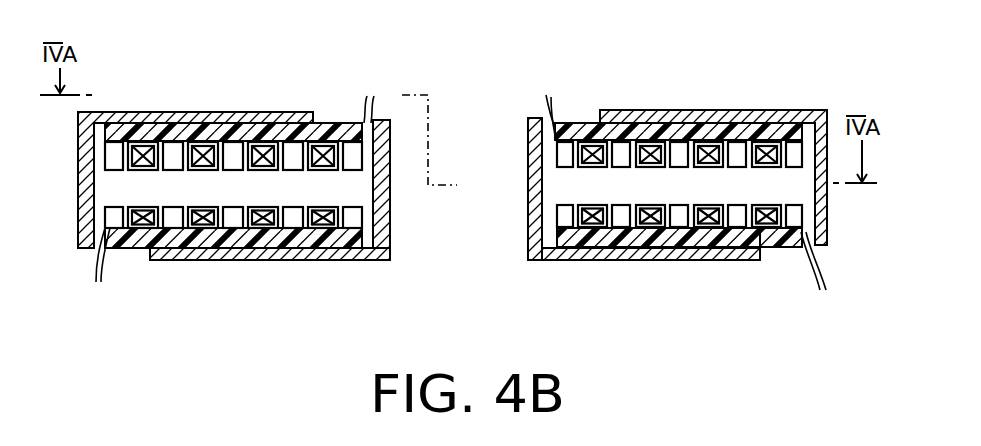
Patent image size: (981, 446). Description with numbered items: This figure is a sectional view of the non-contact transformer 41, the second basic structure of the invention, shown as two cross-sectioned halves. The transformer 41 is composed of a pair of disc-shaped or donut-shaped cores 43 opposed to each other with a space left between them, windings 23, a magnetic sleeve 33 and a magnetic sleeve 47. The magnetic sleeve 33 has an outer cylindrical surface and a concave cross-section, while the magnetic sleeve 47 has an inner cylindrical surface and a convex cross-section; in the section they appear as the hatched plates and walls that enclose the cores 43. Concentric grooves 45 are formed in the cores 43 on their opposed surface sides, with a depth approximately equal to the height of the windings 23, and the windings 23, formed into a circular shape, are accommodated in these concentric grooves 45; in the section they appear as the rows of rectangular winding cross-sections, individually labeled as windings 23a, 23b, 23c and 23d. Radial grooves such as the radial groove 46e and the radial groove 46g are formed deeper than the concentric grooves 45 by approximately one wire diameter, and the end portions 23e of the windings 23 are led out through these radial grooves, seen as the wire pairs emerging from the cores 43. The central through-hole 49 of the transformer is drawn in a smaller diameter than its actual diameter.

The windings 23 is at (325, 153).
The winding 23a is at (590, 205).
The winding 23b is at (650, 205).
The winding 23c is at (708, 205).
The winding 23d is at (766, 205).
The end portions of the windings 23e is at (362, 105).
The magnetic sleeve 33 is at (125, 118).
The non-contact transformer 41 is at (644, 188).
The disc-shaped cores 43 is at (200, 132).
The concentric grooves 45 is at (745, 252).
The radial groove 46e is at (778, 245).
The radial groove 46g is at (353, 217).
The magnetic sleeve 47 is at (393, 142).
The central through-hole 49 is at (487, 140).